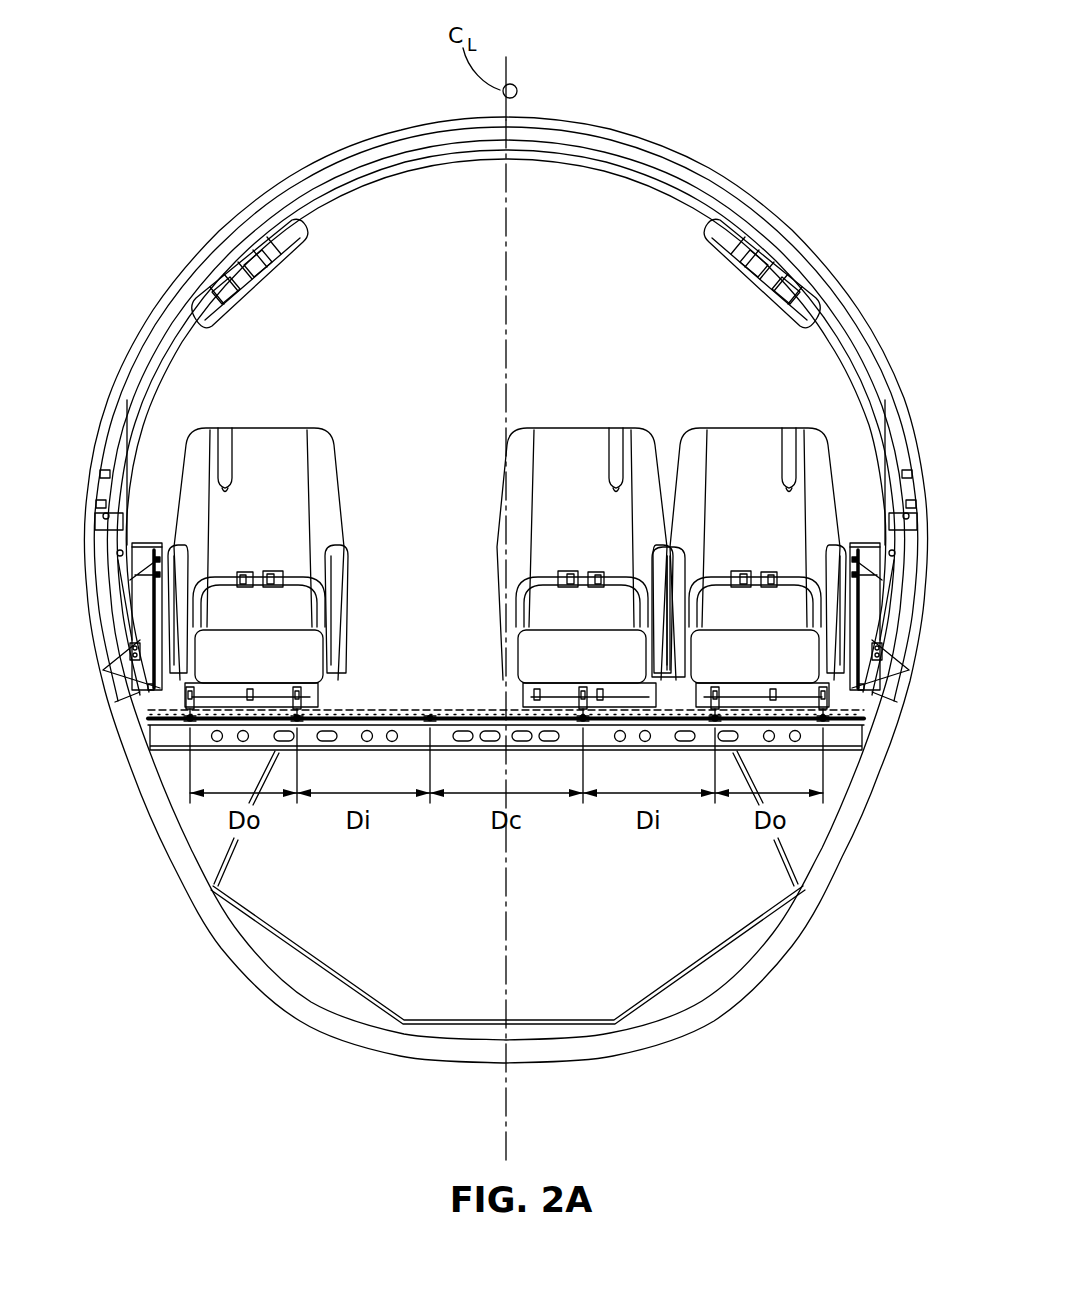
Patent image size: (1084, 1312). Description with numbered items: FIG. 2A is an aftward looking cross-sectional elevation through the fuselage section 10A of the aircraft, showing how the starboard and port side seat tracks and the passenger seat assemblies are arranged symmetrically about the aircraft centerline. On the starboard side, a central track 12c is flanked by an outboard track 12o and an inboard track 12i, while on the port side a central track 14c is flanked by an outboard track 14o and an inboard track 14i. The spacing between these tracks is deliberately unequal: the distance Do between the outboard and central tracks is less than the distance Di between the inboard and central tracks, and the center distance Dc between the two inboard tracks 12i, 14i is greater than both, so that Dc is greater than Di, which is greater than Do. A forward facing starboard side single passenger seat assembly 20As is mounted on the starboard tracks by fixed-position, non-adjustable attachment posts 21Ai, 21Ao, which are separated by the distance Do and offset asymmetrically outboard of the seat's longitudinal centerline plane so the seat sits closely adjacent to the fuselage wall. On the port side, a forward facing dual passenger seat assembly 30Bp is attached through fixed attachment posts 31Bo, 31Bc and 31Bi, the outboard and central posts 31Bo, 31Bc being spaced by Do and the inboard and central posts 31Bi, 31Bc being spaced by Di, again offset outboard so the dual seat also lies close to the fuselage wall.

The fuselage section 10A is at (664, 136).
The forward facing starboard side single passenger seat assembly 20As is at (348, 444).
The forward facing port side dual passenger seat assembly 30Bp is at (672, 430).
The outboard track 12o is at (191, 712).
The central track 12c is at (300, 715).
The inboard track 12i is at (424, 716).
The inboard track 14i is at (583, 712).
The central track 14c is at (715, 712).
The outboard track 14o is at (830, 722).
The attachment post 21Ai is at (258, 706).
The attachment post 21Ao is at (190, 712).
The attachment post 31Bi is at (588, 703).
The attachment post 31Bc is at (720, 703).
The attachment post 31Bo is at (828, 697).